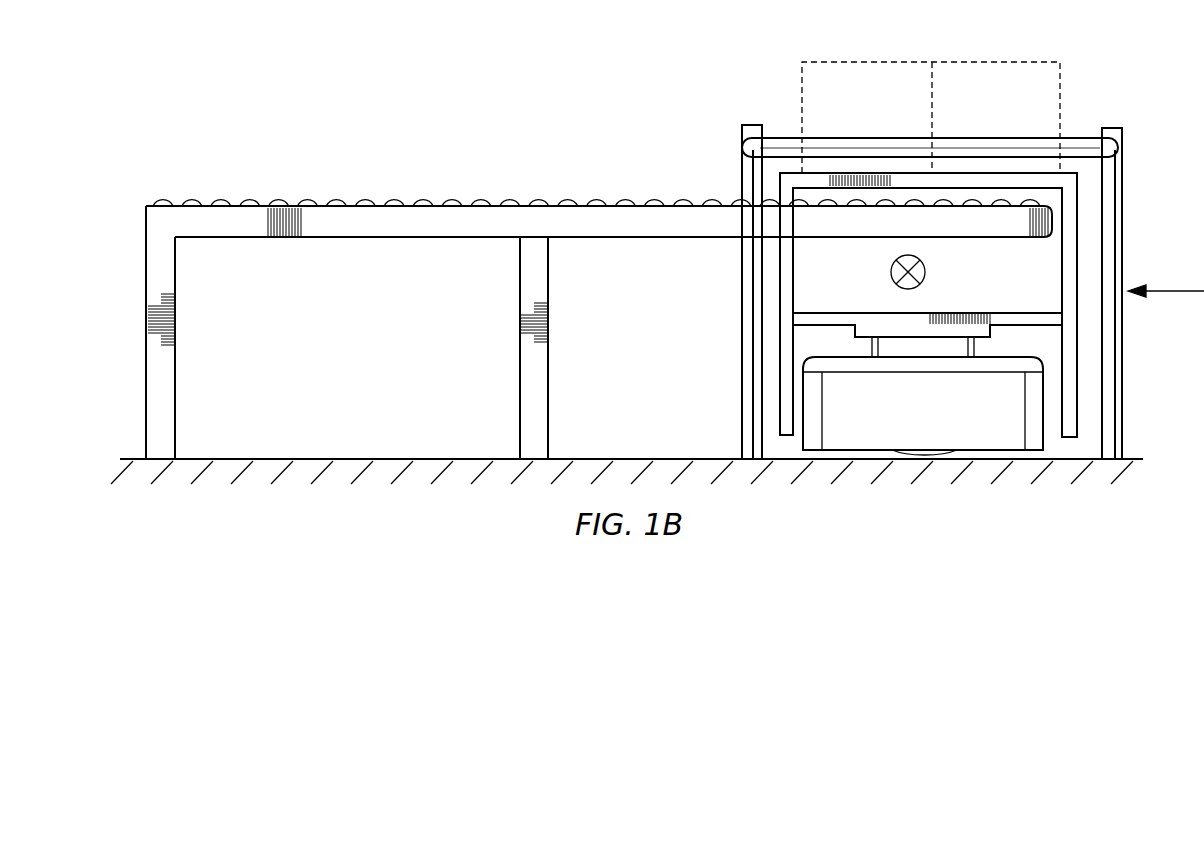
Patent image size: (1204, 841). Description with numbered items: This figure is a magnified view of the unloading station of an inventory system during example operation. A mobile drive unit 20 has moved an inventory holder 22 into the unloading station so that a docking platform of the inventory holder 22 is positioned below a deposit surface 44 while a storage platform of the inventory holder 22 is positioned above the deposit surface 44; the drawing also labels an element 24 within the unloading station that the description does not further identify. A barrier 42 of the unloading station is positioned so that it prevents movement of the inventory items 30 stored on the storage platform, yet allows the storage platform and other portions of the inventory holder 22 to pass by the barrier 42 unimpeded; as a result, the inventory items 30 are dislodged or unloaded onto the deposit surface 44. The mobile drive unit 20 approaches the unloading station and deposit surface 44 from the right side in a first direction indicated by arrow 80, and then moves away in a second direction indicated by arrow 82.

The mobile drive unit 20 is at (982, 437).
The inventory holder 22 is at (993, 173).
The shelf 24 is at (1062, 257).
The inventory items 30 is at (994, 63).
The barrier 42 is at (1079, 138).
The deposit surface 44 is at (656, 204).
The arrow 80 is at (1162, 286).
The arrow 82 is at (860, 283).